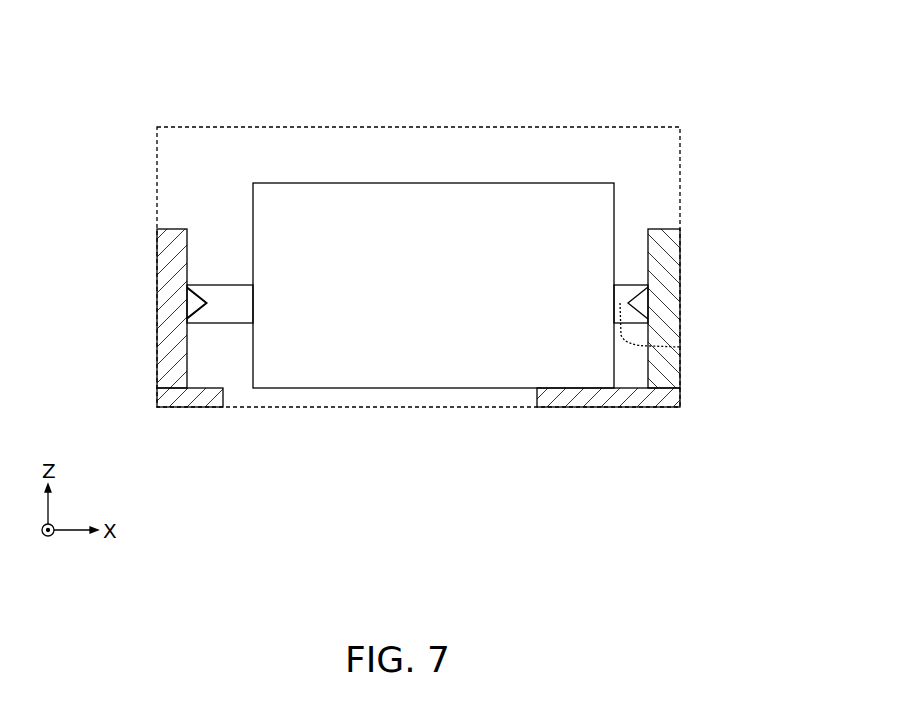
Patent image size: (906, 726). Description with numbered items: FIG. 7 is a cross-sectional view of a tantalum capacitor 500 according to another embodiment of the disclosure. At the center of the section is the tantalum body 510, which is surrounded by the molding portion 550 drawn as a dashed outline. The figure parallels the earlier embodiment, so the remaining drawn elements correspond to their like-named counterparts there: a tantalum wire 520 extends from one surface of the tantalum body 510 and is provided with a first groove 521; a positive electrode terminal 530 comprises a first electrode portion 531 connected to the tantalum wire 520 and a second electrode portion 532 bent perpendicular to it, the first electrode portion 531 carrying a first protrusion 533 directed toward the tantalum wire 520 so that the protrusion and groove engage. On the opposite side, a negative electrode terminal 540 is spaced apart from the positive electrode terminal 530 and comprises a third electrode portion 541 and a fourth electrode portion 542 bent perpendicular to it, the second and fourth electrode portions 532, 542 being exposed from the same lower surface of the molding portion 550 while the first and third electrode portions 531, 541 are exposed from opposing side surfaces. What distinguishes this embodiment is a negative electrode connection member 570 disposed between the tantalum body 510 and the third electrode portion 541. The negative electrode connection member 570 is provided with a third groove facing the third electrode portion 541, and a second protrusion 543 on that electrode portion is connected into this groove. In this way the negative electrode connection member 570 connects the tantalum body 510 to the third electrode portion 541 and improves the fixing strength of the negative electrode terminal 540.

The tantalum capacitor 500 is at (364, 30).
The tantalum body 510 is at (600, 200).
The connecting member 520 is at (217, 312).
The connection portion 521 is at (218, 280).
The first bracket 530 is at (176, 414).
The first vertical portion 531 is at (157, 382).
The first horizontal portion 532 is at (211, 408).
The first protrusion 533 is at (192, 300).
The negative electrode terminal 540 is at (661, 414).
The third electrode portion 541 is at (668, 265).
The second horizontal portion 542 is at (625, 408).
The second protrusion 543 is at (645, 303).
The outer case 550 is at (571, 120).
The negative electrode connection member 570 is at (680, 347).